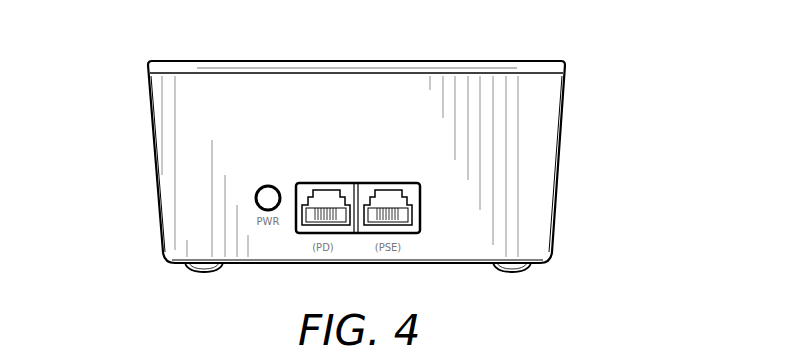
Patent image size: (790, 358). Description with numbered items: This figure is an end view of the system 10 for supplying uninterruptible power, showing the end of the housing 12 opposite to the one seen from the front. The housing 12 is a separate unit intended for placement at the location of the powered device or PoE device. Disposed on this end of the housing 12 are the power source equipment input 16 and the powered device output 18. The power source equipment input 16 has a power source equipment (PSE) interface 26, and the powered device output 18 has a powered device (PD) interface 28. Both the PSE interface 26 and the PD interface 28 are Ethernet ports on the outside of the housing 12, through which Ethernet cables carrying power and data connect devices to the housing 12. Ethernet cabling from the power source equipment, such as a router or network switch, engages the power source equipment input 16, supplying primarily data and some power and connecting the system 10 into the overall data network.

The system for supplying uninterruptible power 10 is at (128, 63).
The housing 12 is at (563, 158).
The power source equipment input 16 is at (398, 224).
The powered device output 18 is at (328, 224).
The power source equipment (PSE) interface 26 is at (384, 206).
The powered device (PD) interface 28 is at (318, 206).